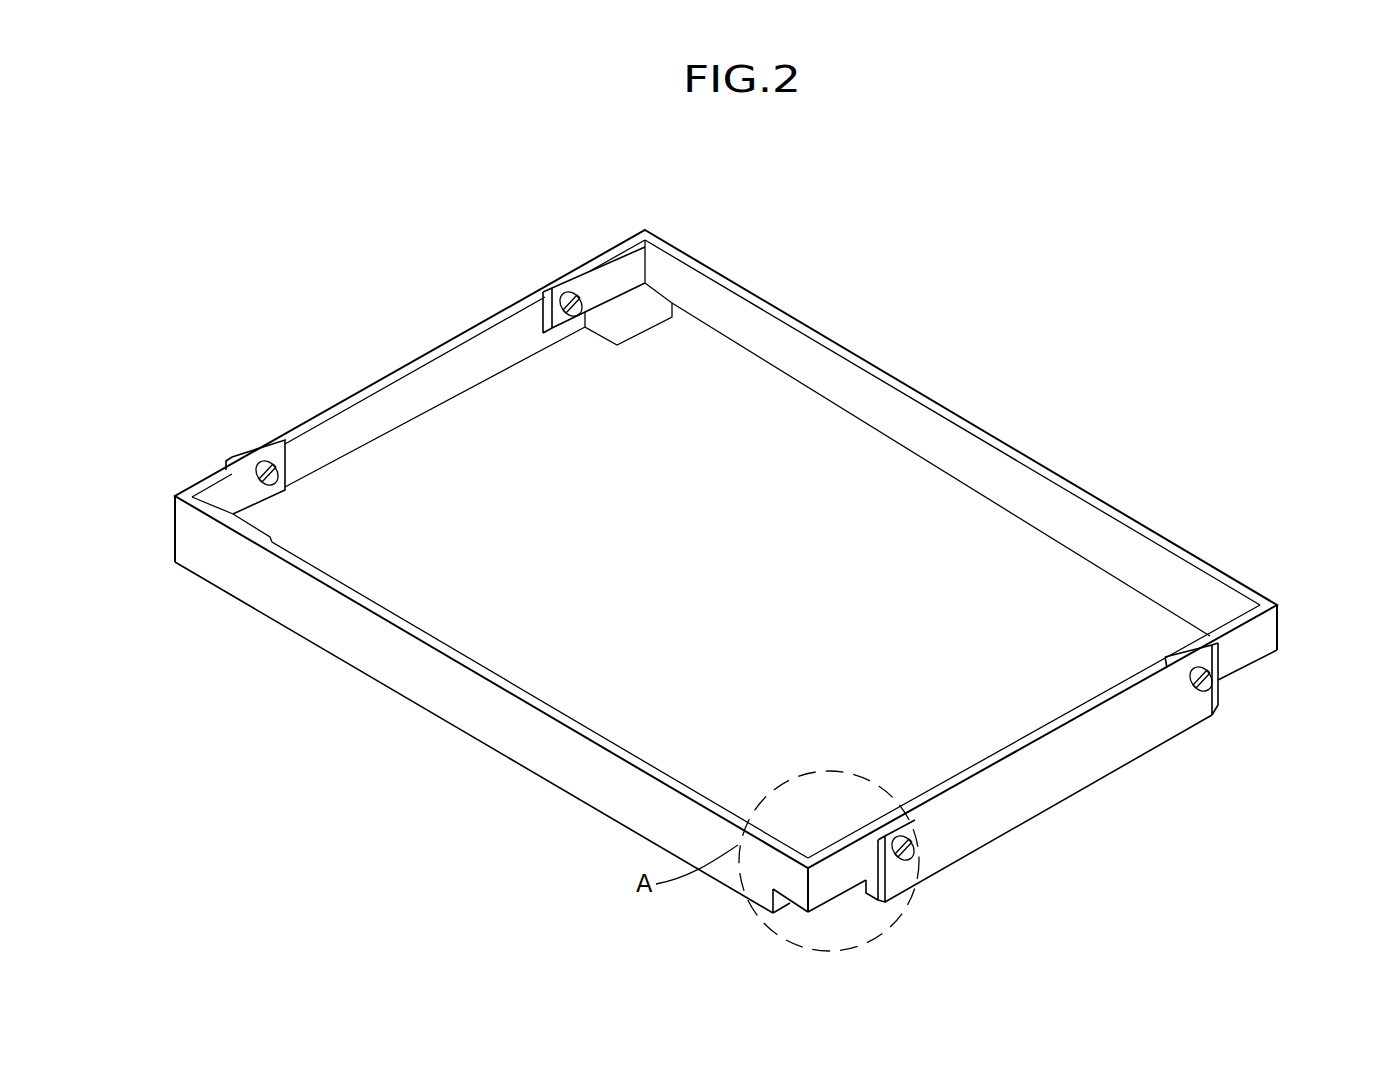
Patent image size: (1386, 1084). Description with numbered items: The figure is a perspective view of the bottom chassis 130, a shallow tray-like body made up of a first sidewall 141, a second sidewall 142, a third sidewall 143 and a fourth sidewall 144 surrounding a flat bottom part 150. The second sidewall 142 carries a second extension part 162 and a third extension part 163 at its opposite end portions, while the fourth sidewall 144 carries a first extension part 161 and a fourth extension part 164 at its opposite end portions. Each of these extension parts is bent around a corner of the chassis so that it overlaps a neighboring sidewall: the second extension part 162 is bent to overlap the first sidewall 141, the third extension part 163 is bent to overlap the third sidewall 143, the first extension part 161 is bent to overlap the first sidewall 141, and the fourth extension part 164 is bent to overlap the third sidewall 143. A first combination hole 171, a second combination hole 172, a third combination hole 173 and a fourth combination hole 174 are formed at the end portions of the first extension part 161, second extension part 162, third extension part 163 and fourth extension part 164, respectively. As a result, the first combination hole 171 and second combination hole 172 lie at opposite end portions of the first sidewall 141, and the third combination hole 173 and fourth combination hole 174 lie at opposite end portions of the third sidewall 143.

The bottom chassis 130 is at (760, 173).
The first sidewall 141 is at (1023, 798).
The second sidewall 142 is at (438, 688).
The third sidewall 143 is at (402, 377).
The fourth sidewall 144 is at (1012, 471).
The bottom part 150 is at (975, 580).
The first extension part 161 is at (1237, 660).
The second extension part 162 is at (835, 885).
The third extension part 163 is at (222, 491).
The fourth extension part 164 is at (627, 266).
The first combination hole 171 is at (1213, 680).
The second combination hole 172 is at (908, 855).
The third combination hole 173 is at (286, 468).
The fourth combination hole 174 is at (580, 303).